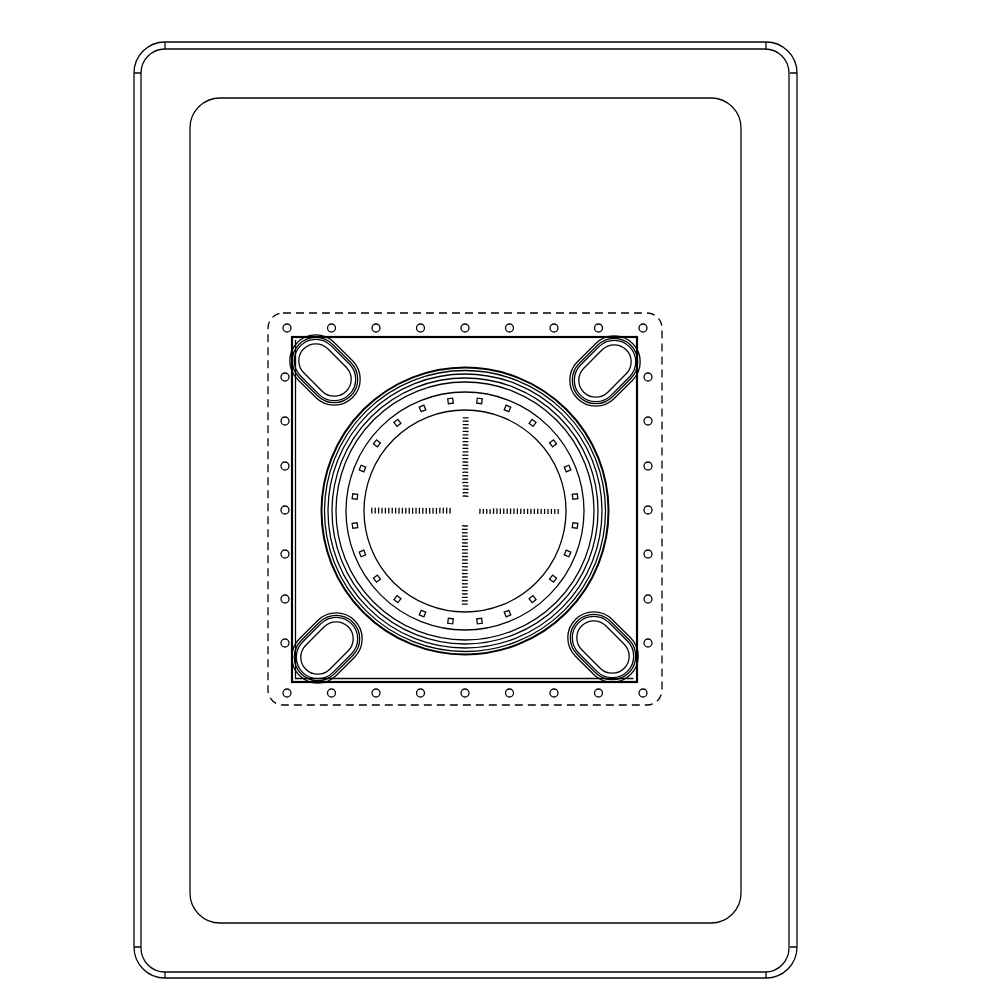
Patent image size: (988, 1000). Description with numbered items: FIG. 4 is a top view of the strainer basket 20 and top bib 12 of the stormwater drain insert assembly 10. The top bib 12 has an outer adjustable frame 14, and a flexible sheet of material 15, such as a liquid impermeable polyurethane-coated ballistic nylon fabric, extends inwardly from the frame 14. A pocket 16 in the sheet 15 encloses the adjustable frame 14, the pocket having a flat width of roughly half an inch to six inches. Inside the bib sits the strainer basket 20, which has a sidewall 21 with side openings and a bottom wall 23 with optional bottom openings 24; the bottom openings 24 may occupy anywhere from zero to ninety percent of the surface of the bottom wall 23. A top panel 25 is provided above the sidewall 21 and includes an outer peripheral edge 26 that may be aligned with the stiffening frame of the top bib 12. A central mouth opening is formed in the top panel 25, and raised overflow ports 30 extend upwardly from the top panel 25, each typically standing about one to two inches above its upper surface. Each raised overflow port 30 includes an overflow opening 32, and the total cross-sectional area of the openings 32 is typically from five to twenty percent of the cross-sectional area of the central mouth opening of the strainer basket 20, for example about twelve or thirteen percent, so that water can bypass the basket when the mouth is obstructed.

The stormwater drain insert assembly 10 is at (104, 70).
The top bib 12 is at (158, 482).
The outer adjustable frame 14 is at (138, 833).
The flexible sheet of material 15 is at (217, 663).
The pocket 16 is at (163, 735).
The strainer basket 20 is at (618, 493).
The sidewall 21 is at (605, 520).
The bottom wall 23 is at (503, 590).
The bottom openings 24 is at (494, 578).
The top panel 25 is at (492, 355).
The outer peripheral edge 26 is at (266, 544).
The raised overflow ports 30 is at (350, 356).
The overflow opening 32 is at (325, 378).